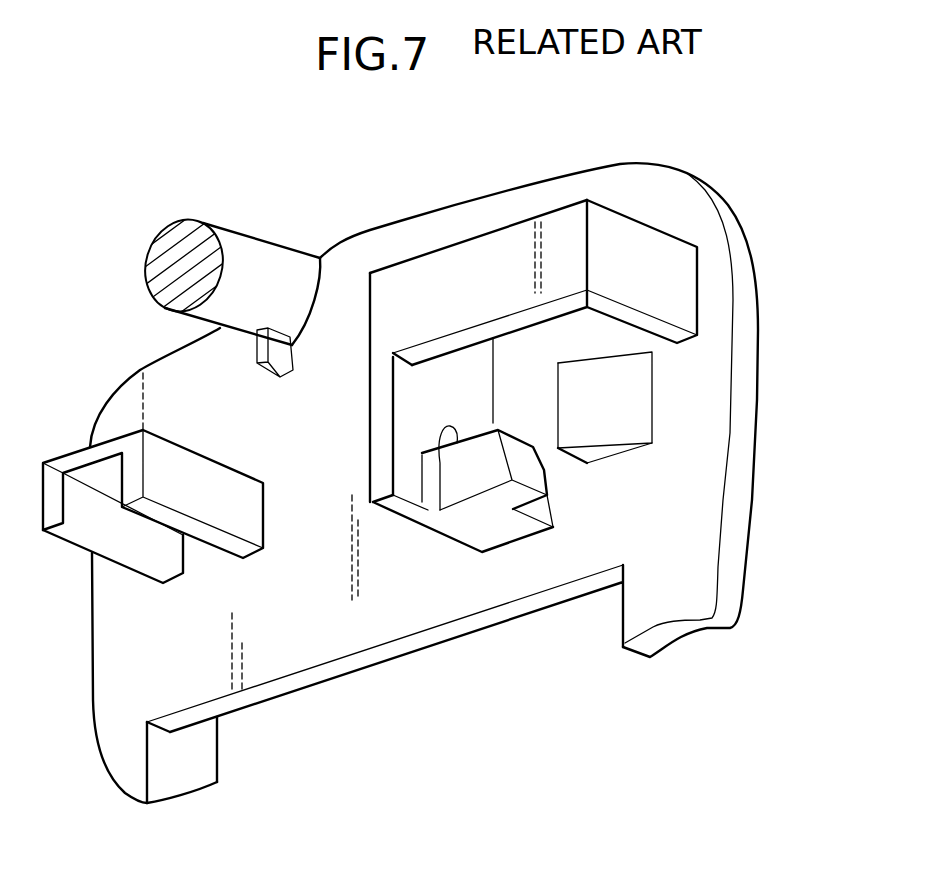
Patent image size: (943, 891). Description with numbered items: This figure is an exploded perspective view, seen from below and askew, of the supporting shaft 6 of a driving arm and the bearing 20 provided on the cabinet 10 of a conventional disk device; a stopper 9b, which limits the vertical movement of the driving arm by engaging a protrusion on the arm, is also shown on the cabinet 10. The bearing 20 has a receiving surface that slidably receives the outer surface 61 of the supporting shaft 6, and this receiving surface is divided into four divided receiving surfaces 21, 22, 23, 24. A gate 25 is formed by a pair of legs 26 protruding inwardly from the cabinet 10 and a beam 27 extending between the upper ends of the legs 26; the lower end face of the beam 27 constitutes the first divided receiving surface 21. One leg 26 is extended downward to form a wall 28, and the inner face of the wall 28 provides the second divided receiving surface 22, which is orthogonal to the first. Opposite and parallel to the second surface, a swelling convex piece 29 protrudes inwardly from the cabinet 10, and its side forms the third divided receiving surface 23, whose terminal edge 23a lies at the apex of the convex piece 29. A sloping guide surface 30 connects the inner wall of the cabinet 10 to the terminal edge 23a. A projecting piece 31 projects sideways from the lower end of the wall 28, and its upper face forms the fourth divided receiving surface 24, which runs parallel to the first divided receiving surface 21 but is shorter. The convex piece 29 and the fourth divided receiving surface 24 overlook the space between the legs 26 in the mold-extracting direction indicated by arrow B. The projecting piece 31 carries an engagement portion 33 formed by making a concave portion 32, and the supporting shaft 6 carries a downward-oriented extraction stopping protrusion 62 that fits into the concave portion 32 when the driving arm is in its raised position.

The supporting shaft 6 is at (249, 240).
The outer surface 61 is at (288, 277).
The extraction stopping protrusion 62 is at (270, 380).
The stopper 9b is at (82, 447).
The cabinet 10 is at (742, 223).
The bearing 20 is at (668, 213).
The first divided receiving surface 21 is at (473, 338).
The second divided receiving surface 22 is at (407, 390).
The third divided receiving surface 23 is at (573, 460).
The terminal edge 23a is at (557, 412).
The fourth divided receiving surface 24 is at (430, 524).
The gate 25 is at (557, 207).
The legs 26 is at (613, 233).
The beam 27 is at (507, 253).
The wall 28 is at (385, 450).
The convex piece 29 is at (610, 450).
The sloping guide surface 30 is at (632, 398).
The projecting piece 31 is at (495, 498).
The concave portion 32 is at (537, 510).
The engagement portion 33 is at (513, 490).
The arrow B is at (778, 438).